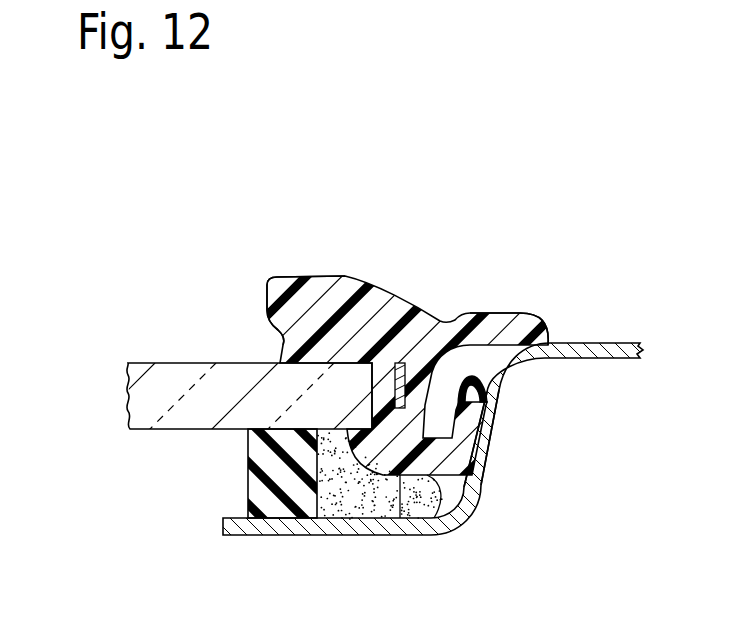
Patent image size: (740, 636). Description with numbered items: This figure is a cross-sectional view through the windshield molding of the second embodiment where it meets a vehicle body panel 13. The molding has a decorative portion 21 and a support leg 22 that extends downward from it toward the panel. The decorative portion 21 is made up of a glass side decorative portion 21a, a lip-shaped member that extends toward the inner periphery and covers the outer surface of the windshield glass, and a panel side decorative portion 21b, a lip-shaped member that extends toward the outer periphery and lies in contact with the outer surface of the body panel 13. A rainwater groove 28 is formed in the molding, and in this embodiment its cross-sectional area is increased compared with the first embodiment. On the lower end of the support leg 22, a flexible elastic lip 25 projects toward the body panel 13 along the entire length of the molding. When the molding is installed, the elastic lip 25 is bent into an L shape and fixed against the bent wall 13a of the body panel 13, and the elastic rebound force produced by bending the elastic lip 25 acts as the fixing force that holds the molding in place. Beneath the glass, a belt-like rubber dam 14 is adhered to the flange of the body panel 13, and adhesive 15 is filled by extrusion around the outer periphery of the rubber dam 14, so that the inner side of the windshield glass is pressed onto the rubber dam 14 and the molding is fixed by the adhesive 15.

The body panel 13 is at (370, 416).
The bent wall 13a is at (497, 411).
The rubber dam 14 is at (258, 480).
The adhesive 15 is at (338, 497).
The decorative portion 21 is at (370, 373).
The glass side decorative portion 21a is at (382, 210).
The panel side decorative portion 21b is at (515, 277).
The support leg 22 is at (398, 475).
The elastic lip 25 is at (463, 415).
The rainwater groove 28 is at (282, 340).